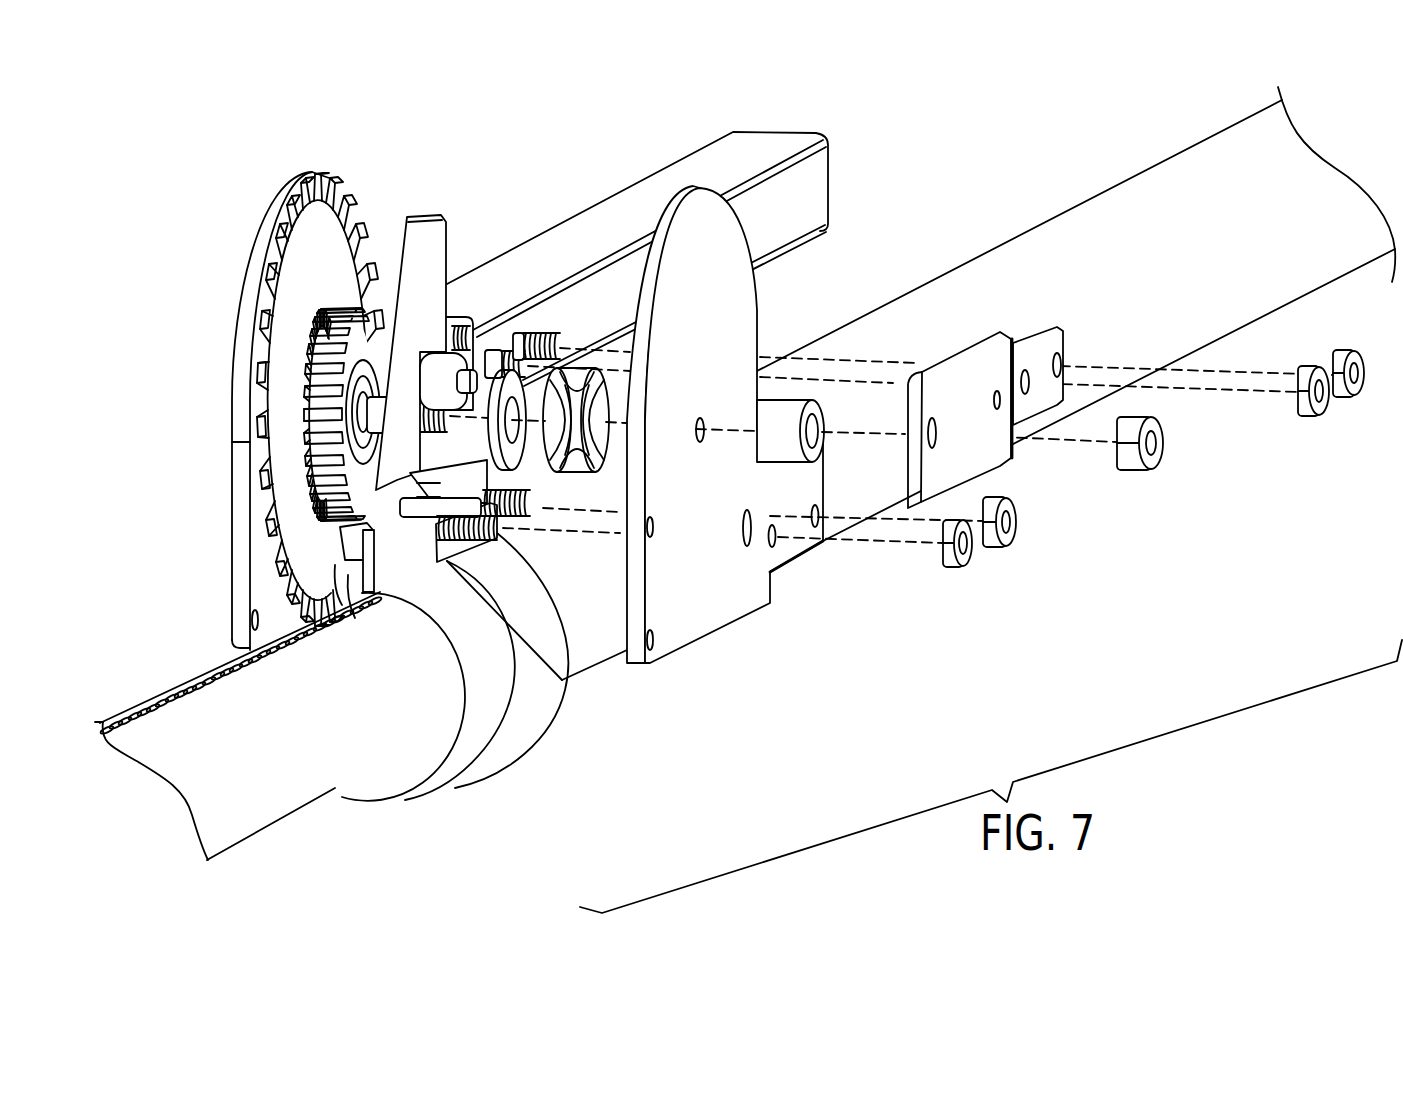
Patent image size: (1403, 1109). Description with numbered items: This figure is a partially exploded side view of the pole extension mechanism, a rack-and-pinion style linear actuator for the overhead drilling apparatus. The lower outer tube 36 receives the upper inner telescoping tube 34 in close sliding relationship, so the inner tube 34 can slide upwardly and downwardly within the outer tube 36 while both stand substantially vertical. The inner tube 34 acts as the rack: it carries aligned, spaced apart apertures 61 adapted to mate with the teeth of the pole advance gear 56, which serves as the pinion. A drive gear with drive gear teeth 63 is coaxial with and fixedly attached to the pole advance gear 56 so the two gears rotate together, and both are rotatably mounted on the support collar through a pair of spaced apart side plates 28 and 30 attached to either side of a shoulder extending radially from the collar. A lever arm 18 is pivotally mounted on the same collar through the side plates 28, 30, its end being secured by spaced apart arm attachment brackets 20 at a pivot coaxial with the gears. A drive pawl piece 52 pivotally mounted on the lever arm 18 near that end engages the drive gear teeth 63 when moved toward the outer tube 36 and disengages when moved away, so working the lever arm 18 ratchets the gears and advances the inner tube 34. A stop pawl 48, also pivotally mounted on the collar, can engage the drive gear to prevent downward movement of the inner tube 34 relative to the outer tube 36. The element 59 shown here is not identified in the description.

The lever arm 18 is at (622, 190).
The arm attachment brackets 20 is at (984, 456).
The side plate 28 is at (248, 305).
The side plate 30 is at (723, 602).
The inner telescoping tube 34 is at (221, 818).
The outer tube 36 is at (1107, 203).
The stop pawl 48 is at (348, 544).
The drive pawl piece 52 is at (423, 251).
The pole advance gear 56 is at (313, 245).
The bracket block 59 is at (562, 680).
The apertures 61 is at (190, 680).
The drive gear teeth 63 is at (315, 428).